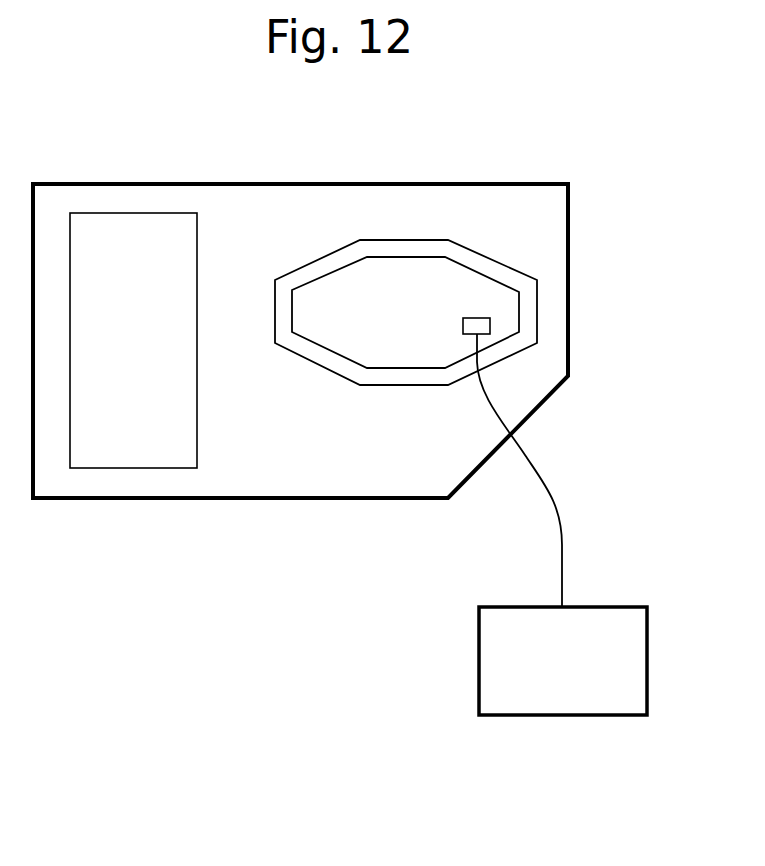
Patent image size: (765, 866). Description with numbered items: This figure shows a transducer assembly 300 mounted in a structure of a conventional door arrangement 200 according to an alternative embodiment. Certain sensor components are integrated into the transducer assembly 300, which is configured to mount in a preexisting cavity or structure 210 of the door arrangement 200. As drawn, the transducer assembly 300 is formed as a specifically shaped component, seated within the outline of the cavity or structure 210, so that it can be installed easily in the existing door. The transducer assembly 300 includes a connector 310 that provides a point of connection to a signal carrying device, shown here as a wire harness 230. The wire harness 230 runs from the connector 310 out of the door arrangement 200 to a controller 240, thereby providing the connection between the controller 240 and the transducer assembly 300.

The door arrangement 200 is at (423, 184).
The cavity or structure 210 is at (360, 372).
The transducer assembly 300 is at (473, 287).
The connector 310 is at (490, 324).
The wire harness 230 is at (558, 508).
The controller 240 is at (620, 608).